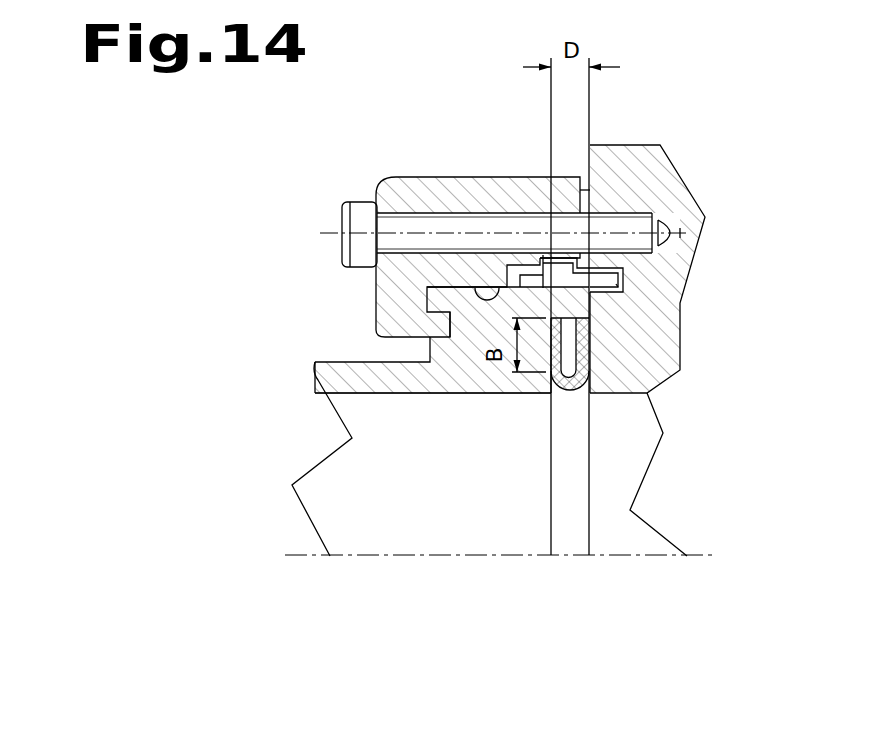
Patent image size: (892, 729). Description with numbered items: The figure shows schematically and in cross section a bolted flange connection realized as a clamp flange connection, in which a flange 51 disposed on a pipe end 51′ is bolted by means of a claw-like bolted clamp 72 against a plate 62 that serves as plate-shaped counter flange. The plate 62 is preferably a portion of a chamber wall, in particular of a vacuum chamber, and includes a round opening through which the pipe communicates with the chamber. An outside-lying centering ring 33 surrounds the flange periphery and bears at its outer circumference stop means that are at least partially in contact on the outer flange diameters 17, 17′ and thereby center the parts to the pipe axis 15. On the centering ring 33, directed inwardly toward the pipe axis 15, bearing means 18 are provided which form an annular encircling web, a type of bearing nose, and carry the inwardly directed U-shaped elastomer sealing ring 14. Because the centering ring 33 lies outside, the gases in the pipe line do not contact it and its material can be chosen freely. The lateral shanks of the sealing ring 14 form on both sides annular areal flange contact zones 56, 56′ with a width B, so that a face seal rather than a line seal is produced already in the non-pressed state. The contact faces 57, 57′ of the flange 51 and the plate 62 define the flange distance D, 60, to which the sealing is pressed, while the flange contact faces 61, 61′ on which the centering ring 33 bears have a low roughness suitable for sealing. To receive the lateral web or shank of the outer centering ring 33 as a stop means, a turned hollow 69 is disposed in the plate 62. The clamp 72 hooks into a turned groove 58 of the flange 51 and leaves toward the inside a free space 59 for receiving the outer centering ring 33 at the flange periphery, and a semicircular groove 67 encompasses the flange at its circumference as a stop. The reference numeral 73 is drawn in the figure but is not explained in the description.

The U-shaped elastomer sealing ring 14 is at (543, 397).
The pipe axis 15 is at (660, 558).
The outer flange diameter 17 is at (530, 277).
The outer flange diameter 17′ is at (616, 284).
The bearing means 18 is at (568, 372).
The centering ring 33 is at (567, 288).
The flange 51 is at (482, 358).
The pipe end 51′ is at (373, 382).
The flange contact zone 56 is at (549, 352).
The flange contact zone 56′ is at (592, 355).
The contact face 57 is at (512, 395).
The contact face 57′ is at (607, 398).
The turned groove 58 is at (448, 327).
The free space 59 is at (540, 258).
The flange distance D 60 is at (550, 46).
The flange contact face 61 is at (548, 303).
The flange contact face 61′ is at (592, 303).
The plate 62 is at (641, 183).
The semicircular groove 67 is at (478, 293).
The turned hollow 69 is at (633, 282).
The bolted clamp 72 is at (425, 193).
The bolt head 73 is at (365, 210).